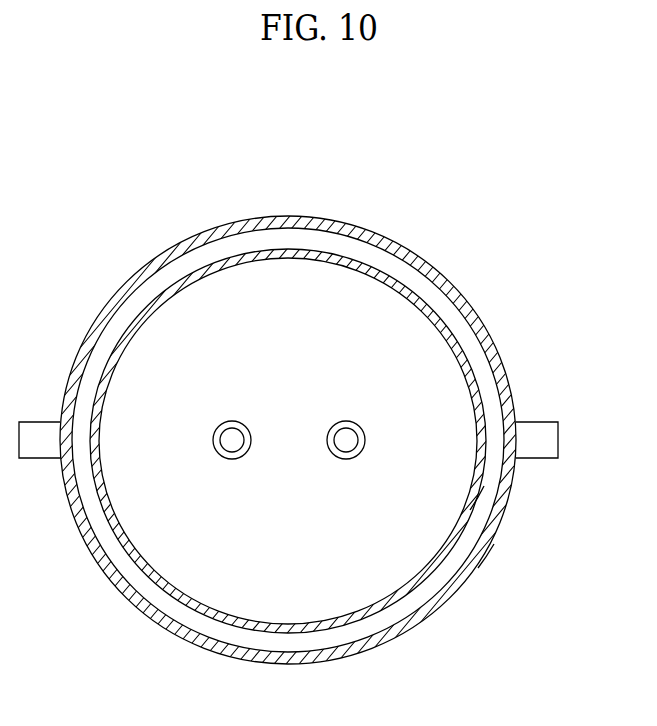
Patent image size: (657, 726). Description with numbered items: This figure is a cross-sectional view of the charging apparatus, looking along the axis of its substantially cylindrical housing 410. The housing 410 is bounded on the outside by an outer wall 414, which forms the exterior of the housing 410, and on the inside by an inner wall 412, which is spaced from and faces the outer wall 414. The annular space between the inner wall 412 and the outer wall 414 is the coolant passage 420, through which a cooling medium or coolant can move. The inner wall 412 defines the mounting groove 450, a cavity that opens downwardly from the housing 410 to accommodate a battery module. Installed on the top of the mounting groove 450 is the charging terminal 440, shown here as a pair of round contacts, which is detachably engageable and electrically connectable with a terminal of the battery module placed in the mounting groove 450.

The housing 410 is at (482, 319).
The inner wall 412 is at (467, 504).
The outer wall 414 is at (478, 567).
The coolant passage 420 is at (409, 264).
The charging terminal 440 is at (353, 421).
The mounting groove 450 is at (299, 280).